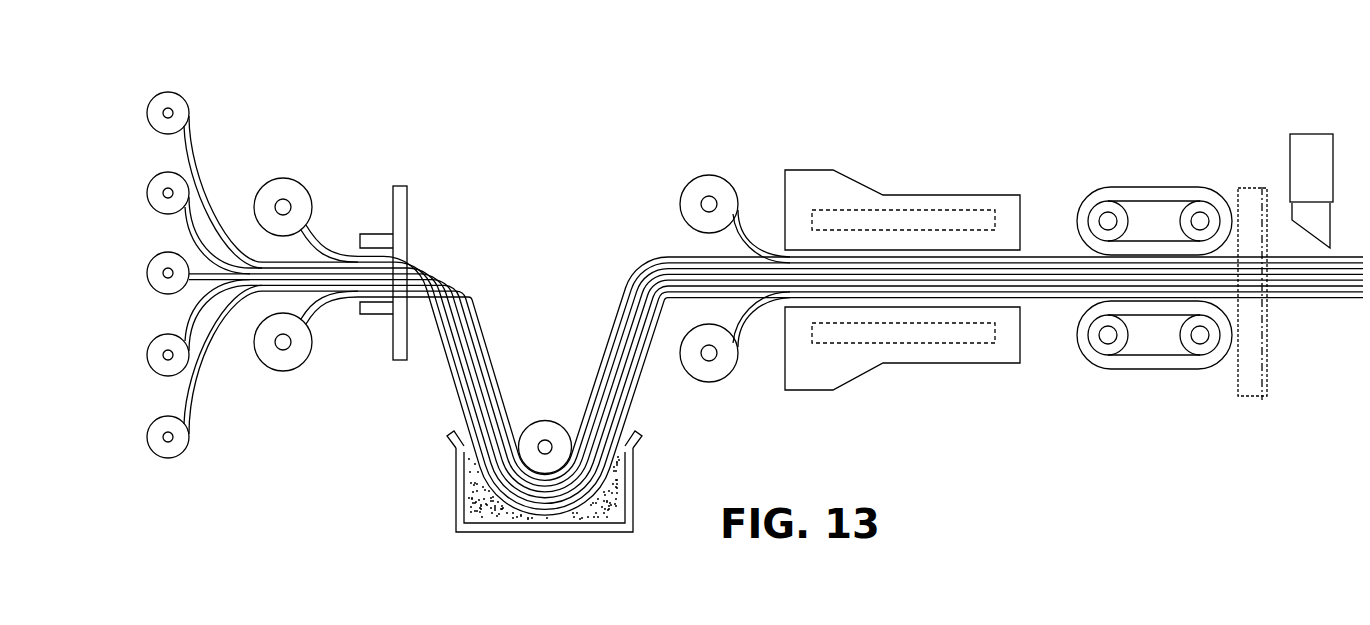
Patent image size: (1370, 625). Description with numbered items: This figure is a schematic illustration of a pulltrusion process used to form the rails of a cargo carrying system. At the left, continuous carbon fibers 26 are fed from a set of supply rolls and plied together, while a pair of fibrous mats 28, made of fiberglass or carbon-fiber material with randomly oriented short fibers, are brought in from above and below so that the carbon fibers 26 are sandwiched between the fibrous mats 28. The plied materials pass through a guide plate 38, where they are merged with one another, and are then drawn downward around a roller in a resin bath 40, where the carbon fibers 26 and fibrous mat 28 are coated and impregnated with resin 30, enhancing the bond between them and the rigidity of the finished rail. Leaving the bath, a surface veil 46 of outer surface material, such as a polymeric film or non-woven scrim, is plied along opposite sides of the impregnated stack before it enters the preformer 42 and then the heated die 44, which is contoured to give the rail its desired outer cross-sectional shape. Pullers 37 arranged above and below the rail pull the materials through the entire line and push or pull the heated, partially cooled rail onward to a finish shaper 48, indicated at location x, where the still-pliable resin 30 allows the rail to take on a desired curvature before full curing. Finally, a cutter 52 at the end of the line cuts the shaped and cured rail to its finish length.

The carbon fibers 26 is at (193, 137).
The fibrous mat 28 is at (327, 252).
The resin 30 is at (612, 467).
The pullers 37 is at (1143, 187).
The guide plate 38 is at (407, 200).
The resin bath 40 is at (455, 497).
The preformer 42 is at (832, 170).
The heated die 44 is at (958, 195).
The surface veil 46 is at (740, 222).
The finish shaper 48 is at (1262, 187).
The cutter 52 is at (1317, 134).
The location X x is at (1262, 402).